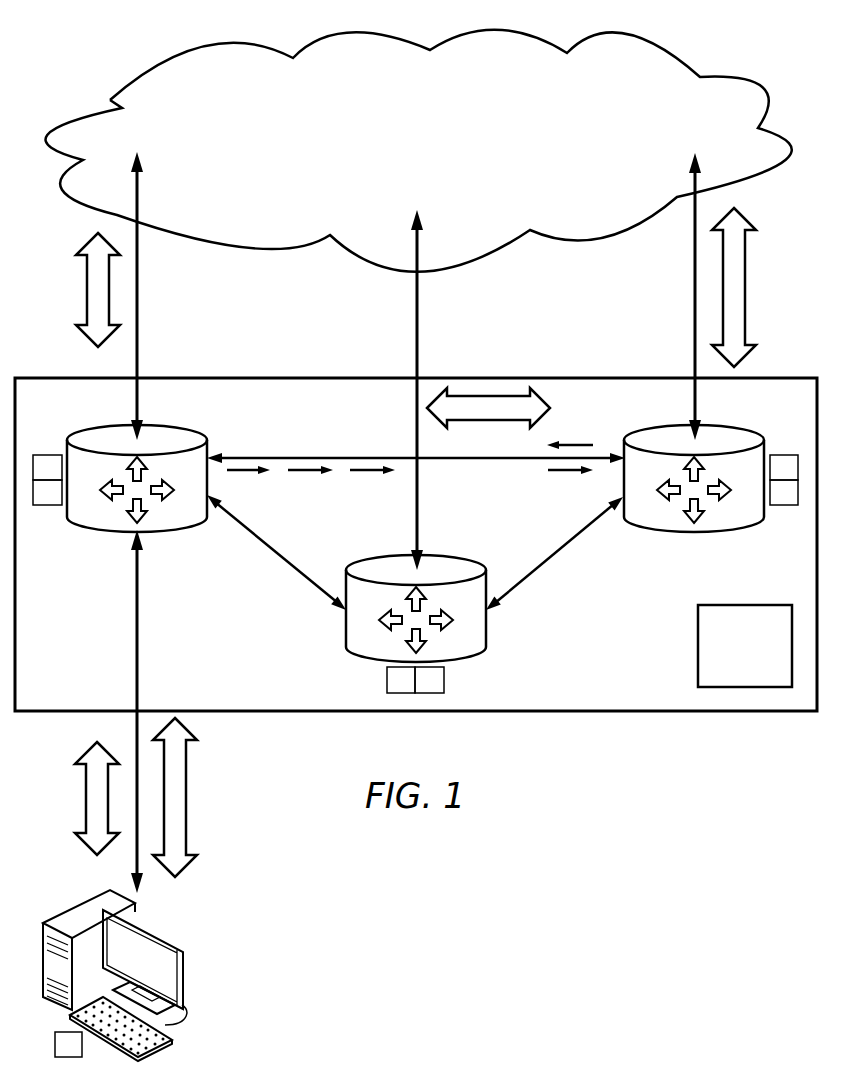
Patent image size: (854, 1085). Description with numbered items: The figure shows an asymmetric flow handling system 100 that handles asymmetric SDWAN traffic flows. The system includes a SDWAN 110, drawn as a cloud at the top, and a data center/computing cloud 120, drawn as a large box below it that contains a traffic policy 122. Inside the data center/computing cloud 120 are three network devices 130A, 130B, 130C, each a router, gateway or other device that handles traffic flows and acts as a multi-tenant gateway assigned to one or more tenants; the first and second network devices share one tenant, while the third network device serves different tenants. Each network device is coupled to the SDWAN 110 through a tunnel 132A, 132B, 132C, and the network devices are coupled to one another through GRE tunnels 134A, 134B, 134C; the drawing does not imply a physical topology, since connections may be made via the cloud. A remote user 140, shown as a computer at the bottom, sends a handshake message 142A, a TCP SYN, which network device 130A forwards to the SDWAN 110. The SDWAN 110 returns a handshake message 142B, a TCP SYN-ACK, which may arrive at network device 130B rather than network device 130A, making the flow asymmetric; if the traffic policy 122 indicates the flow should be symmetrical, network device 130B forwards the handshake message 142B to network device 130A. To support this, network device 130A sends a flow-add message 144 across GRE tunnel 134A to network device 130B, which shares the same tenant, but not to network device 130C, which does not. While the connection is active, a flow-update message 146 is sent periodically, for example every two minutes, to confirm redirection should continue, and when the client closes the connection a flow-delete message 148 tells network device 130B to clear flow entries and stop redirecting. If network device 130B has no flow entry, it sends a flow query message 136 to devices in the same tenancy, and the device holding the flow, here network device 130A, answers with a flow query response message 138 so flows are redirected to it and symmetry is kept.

The asymmetric flow handling system 100 is at (172, 7).
The SDWAN 110 is at (419, 151).
The data center/computing cloud 120 is at (80, 378).
The traffic policy 122 is at (745, 646).
The network device 130A is at (178, 432).
The network device 130B is at (723, 420).
The network device 130C is at (449, 567).
The tunnel 132A is at (139, 316).
The tunnel 132B is at (418, 328).
The tunnel 132C is at (695, 303).
The GRE tunnel 134A is at (230, 454).
The GRE tunnel 134B is at (555, 545).
The GRE tunnel 134C is at (277, 553).
The flow query message 136 is at (577, 443).
The flow query response message 138 is at (567, 473).
The remote user 140 is at (152, 930).
The handshake message 142A is at (87, 294).
The handshake message 142B is at (748, 275).
The flow-add message 144 is at (240, 472).
The flow-update message 146 is at (313, 475).
The flow-delete message 148 is at (368, 475).